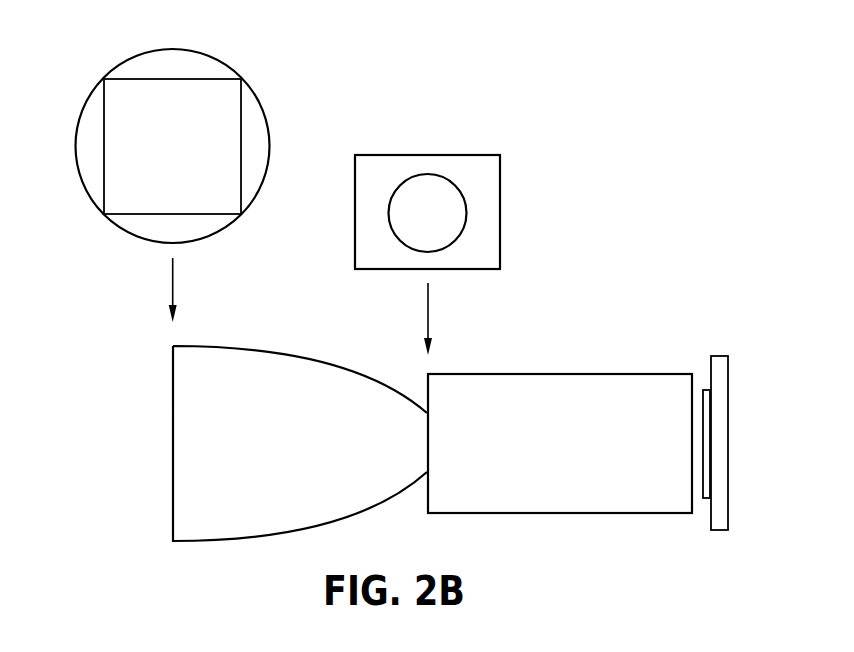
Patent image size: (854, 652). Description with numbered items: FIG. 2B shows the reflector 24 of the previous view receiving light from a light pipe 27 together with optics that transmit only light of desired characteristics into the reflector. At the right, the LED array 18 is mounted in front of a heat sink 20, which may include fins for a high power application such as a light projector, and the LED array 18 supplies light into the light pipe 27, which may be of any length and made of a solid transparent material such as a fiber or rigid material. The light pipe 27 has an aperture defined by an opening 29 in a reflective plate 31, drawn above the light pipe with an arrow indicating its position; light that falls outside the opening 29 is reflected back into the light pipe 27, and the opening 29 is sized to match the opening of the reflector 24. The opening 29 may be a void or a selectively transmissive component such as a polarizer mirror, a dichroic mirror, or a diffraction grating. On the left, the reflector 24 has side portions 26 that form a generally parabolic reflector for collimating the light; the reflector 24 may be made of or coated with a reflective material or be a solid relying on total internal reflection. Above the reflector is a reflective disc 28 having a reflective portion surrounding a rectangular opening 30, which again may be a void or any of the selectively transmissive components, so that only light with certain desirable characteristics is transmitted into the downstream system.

The LED array 18 is at (705, 389).
The heat sink 20 is at (720, 355).
The reflector 24 is at (241, 310).
The side portions 26 is at (315, 358).
The light pipe 27 is at (609, 373).
The reflective disc 28 is at (238, 73).
The opening 29 is at (455, 212).
The rectangular opening 30 is at (118, 117).
The reflective plate 31 is at (487, 153).